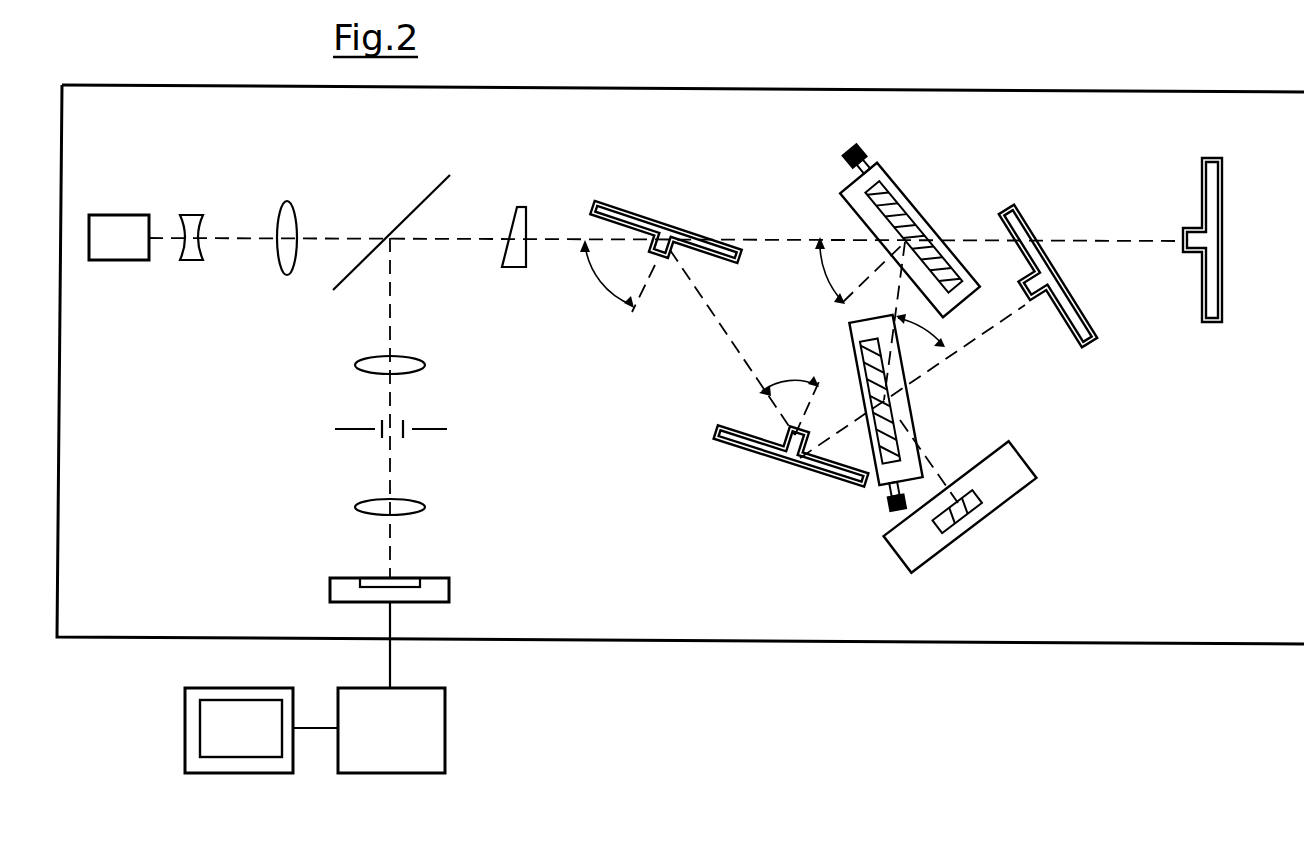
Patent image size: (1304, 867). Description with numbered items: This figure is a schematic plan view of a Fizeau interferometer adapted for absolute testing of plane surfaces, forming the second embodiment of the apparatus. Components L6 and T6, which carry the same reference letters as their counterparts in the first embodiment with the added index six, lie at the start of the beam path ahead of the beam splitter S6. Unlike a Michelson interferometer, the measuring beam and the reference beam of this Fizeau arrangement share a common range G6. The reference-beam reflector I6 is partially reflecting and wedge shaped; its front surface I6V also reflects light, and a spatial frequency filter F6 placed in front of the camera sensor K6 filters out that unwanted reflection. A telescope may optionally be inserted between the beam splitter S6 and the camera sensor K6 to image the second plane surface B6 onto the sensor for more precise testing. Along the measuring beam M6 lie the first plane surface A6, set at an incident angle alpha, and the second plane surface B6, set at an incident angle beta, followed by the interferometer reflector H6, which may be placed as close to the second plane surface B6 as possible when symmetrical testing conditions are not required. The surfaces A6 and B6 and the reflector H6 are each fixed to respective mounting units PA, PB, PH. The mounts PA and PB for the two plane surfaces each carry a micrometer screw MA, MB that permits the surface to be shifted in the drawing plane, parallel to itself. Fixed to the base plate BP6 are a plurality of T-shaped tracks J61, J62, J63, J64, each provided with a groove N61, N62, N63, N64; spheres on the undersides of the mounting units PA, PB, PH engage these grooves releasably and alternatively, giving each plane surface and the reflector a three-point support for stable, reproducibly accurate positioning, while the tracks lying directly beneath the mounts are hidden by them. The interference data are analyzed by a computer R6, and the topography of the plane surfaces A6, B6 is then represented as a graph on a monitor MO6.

The laser source L6 is at (117, 215).
The beam expanding telescope T6 is at (193, 215).
The beam splitter S6 is at (437, 189).
The common range G6 is at (431, 238).
The reference-beam reflector I6 is at (526, 250).
The front surface of reflector I6V is at (518, 207).
The measuring beam M6 is at (563, 237).
The T-shaped track J61 is at (648, 205).
The groove N61 is at (670, 230).
The T-shaped track J62 is at (1218, 158).
The groove N62 is at (1225, 210).
The T-shaped track J63 is at (1092, 343).
The groove N63 is at (1055, 280).
The T-shaped track J64 is at (720, 445).
The groove N64 is at (777, 463).
The mounting unit PA is at (905, 212).
The first plane surface A6 is at (880, 220).
The micrometer screw MA is at (858, 150).
The mounting unit PB is at (912, 432).
The second plane surface B6 is at (900, 398).
The micrometer screw MB is at (895, 508).
The mounting unit PH is at (1020, 462).
The interferometer reflector H6 is at (962, 485).
The spatial frequency filter F6 is at (425, 367).
The camera sensor K6 is at (405, 580).
The computer R6 is at (447, 718).
The monitor MO6 is at (247, 773).
The base plate BP6 is at (1208, 612).